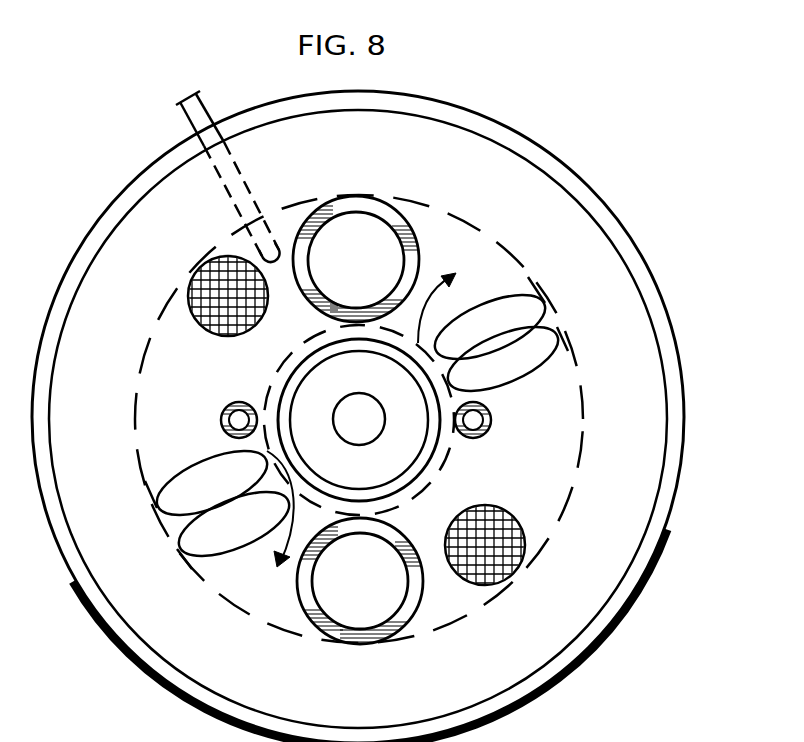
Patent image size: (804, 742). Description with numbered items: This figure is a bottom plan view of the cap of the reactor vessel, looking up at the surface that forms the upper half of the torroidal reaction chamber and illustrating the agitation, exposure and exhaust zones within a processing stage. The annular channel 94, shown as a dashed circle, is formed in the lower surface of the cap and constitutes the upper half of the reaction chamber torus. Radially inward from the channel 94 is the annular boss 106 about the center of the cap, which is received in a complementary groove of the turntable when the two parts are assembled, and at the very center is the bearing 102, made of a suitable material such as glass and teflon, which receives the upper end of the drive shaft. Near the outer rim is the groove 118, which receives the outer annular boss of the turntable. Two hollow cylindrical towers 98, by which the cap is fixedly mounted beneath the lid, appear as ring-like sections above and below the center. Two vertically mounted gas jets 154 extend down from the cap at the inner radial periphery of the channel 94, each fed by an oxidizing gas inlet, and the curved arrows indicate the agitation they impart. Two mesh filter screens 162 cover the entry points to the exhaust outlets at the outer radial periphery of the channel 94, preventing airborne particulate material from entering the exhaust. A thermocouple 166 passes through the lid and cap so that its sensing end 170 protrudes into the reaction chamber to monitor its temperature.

The annular channel 94 is at (542, 488).
The hollow cylindrical towers 98 is at (402, 214).
The bearing 102 is at (366, 428).
The annular boss 106 is at (407, 471).
The groove 118 is at (612, 593).
The gas jet 154 is at (246, 404).
The mesh filter screens 162 is at (189, 303).
The thermocouple 166 is at (209, 176).
The sensing end 170 is at (270, 233).